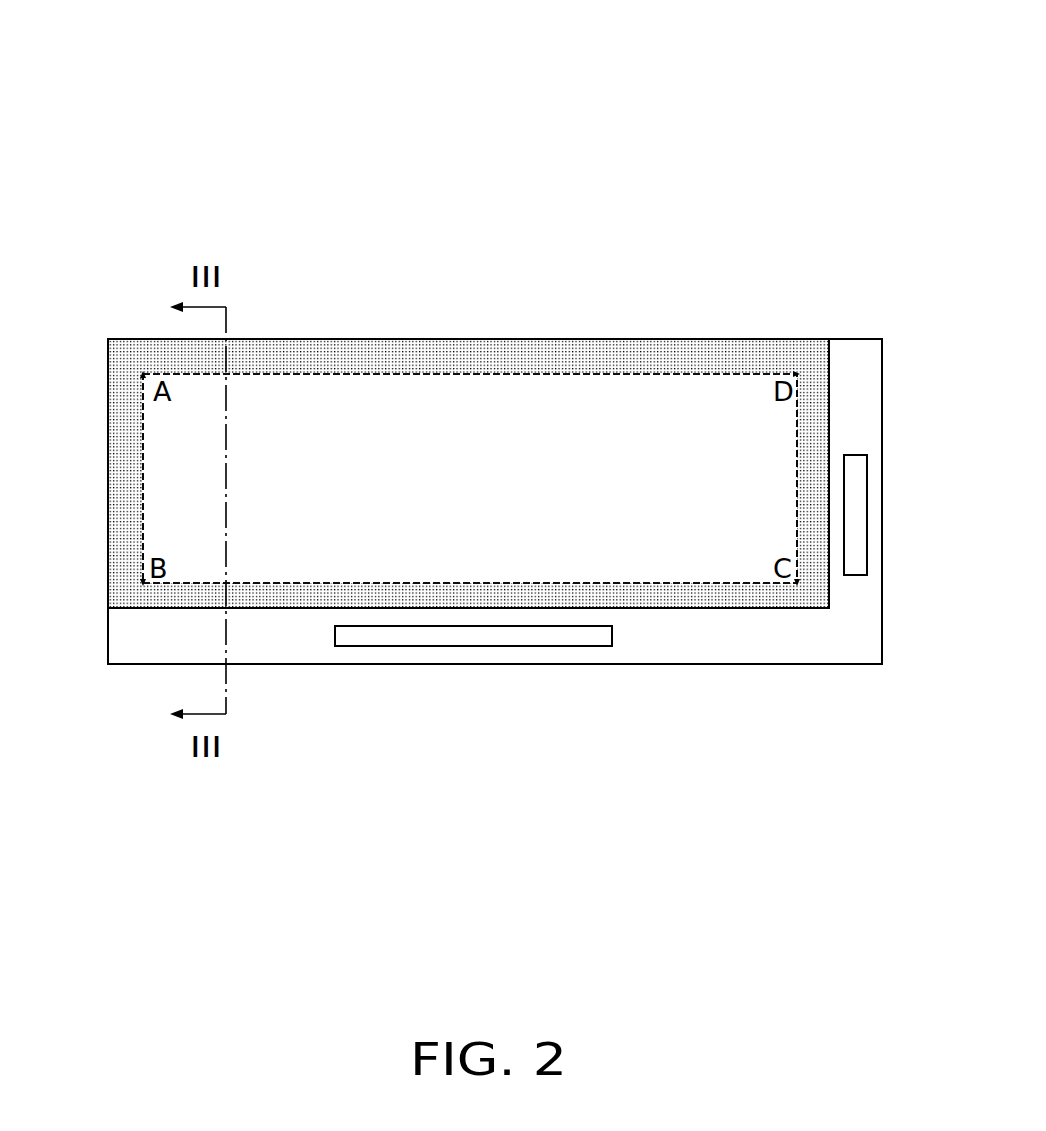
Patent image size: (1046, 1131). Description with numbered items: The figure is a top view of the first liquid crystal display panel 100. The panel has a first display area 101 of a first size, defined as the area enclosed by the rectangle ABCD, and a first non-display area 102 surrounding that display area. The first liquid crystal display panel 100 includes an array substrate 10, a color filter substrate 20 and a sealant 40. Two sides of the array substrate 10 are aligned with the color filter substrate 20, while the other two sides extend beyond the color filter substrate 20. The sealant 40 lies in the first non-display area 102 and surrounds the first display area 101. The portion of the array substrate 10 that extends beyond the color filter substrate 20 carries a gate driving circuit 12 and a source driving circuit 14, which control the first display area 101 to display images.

The first liquid crystal display panel 100 is at (523, 74).
The array substrate 10 is at (858, 445).
The gate driving circuit 12 is at (868, 562).
The source driving circuit 14 is at (473, 647).
The color filter substrate 20 is at (832, 364).
The sealant 40 is at (808, 525).
The first display area 101 is at (172, 493).
The first non-display area 102 is at (173, 642).